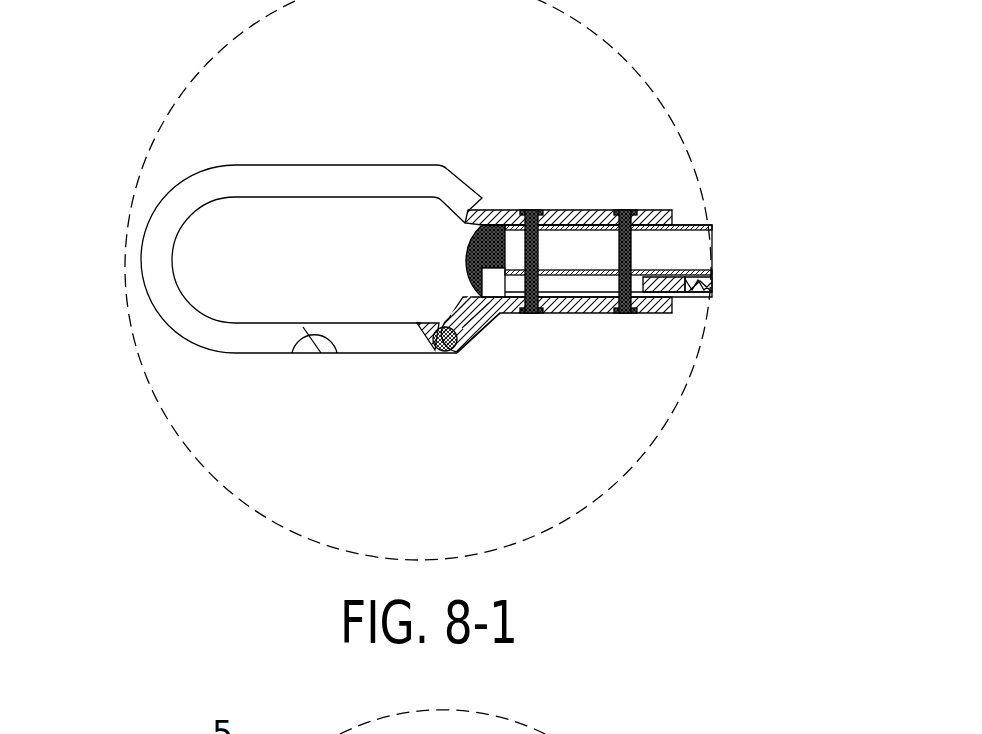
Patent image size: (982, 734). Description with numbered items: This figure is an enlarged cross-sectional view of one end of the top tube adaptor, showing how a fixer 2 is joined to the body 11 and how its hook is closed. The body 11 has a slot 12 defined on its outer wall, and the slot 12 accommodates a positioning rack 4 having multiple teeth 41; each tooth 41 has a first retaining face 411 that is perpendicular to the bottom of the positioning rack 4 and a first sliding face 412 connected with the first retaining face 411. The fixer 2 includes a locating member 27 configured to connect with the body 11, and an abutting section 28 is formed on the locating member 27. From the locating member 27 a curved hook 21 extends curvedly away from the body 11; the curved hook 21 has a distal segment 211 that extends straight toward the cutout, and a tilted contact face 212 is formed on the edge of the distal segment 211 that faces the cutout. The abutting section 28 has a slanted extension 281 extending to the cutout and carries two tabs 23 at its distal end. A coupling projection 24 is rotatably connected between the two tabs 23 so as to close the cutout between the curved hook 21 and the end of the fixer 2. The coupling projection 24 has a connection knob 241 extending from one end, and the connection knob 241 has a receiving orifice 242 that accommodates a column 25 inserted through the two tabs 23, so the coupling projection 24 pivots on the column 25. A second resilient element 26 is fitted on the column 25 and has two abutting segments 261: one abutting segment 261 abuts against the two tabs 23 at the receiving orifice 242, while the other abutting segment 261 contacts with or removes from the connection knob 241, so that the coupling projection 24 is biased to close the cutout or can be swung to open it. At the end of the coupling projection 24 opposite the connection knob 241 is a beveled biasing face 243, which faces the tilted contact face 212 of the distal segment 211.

The fixer 2 is at (147, 218).
The curved hook 21 is at (143, 270).
The distal segment 211 is at (278, 346).
The tilted contact face 212 is at (337, 354).
The beveled biasing face 243 is at (292, 353).
The coupling projection 24 is at (360, 347).
The tabs 23 is at (440, 326).
The column 25 is at (433, 356).
The second resilient element 26 is at (460, 352).
The abutting segments 261 is at (440, 325).
The connection knob 241 is at (438, 323).
The receiving orifice 242 is at (436, 315).
The locating member 27 is at (568, 212).
The abutting section 28 is at (577, 312).
The slanted extension 281 is at (466, 327).
The body 11 is at (692, 225).
The positioning rack 4 is at (712, 280).
The slot 12 is at (712, 291).
The teeth 41 is at (803, 338).
The first retaining face 411 is at (685, 292).
The first sliding face 412 is at (702, 292).